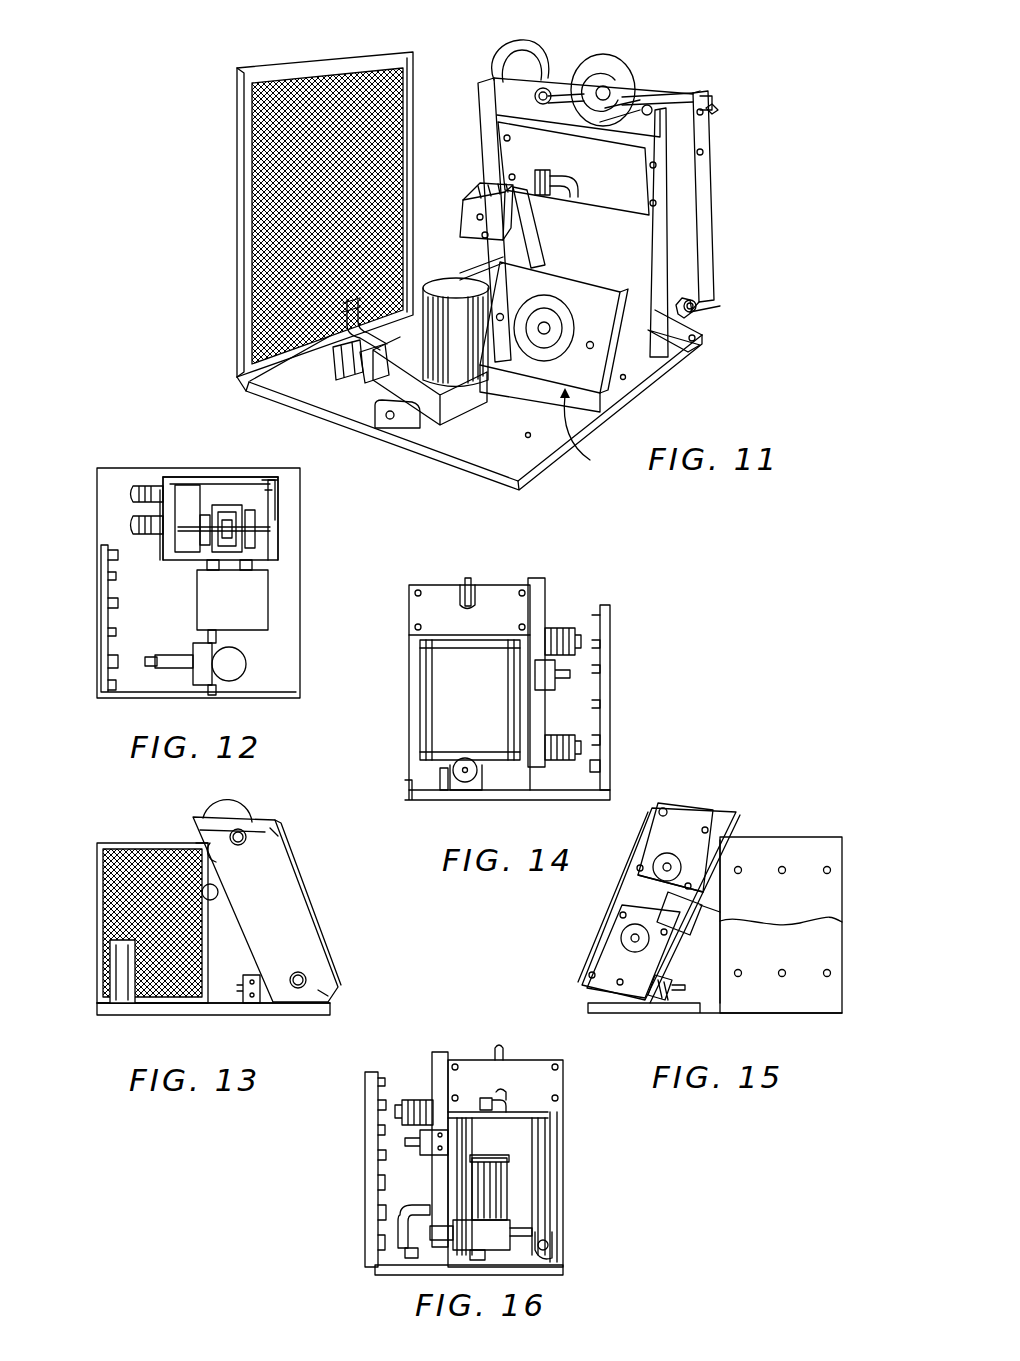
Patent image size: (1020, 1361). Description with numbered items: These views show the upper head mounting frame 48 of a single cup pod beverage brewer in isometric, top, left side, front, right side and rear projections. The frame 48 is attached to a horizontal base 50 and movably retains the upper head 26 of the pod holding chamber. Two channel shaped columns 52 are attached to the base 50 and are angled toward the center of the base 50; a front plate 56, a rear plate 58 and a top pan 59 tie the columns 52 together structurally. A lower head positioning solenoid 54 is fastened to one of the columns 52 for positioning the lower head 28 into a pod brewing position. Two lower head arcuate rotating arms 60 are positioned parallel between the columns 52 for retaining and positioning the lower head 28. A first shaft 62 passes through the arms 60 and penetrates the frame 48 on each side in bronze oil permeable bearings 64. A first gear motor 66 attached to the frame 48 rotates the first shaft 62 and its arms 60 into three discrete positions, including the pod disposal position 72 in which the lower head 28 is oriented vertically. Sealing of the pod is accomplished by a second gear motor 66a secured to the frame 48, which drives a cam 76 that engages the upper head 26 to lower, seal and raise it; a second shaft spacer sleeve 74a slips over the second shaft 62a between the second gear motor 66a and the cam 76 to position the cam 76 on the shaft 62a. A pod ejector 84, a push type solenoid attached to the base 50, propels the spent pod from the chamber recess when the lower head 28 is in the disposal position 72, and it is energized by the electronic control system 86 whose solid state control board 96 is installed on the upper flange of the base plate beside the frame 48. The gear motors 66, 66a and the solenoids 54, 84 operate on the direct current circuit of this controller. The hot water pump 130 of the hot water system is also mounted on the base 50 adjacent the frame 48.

In FIG. 12, the upper head 26 is at (195, 500).
In FIG. 11, the lower head 28 is at (618, 352).
In FIG. 16, the lower head 28 is at (532, 1143).
In FIG. 11, the upper head mounting frame 48 is at (730, 242).
In FIG. 12, the upper head mounting frame 48 is at (194, 442).
In FIG. 14, the upper head mounting frame 48 is at (642, 720).
In FIG. 13, the upper head mounting frame 48 is at (138, 1018).
In FIG. 15, the upper head mounting frame 48 is at (822, 838).
In FIG. 16, the upper head mounting frame 48 is at (582, 1195).
In FIG. 11, the horizontal base 50 is at (538, 488).
In FIG. 12, the horizontal base 50 is at (118, 700).
In FIG. 13, the horizontal base 50 is at (288, 1015).
In FIG. 15, the horizontal base 50 is at (820, 1015).
In FIG. 16, the horizontal base 50 is at (380, 1276).
In FIG. 11, the channel shaped columns 52 is at (480, 100).
In FIG. 12, the channel shaped columns 52 is at (165, 490).
In FIG. 14, the channel shaped columns 52 is at (410, 696).
In FIG. 13, the channel shaped columns 52 is at (320, 932).
In FIG. 15, the channel shaped columns 52 is at (605, 900).
In FIG. 16, the channel shaped columns 52 is at (565, 1175).
In FIG. 11, the lower head positioning solenoid 54 is at (472, 186).
In FIG. 14, the lower head positioning solenoid 54 is at (562, 672).
In FIG. 15, the lower head positioning solenoid 54 is at (843, 930).
In FIG. 16, the lower head positioning solenoid 54 is at (420, 1142).
In FIG. 11, the front plate 56 is at (700, 125).
In FIG. 12, the front plate 56 is at (232, 490).
In FIG. 14, the front plate 56 is at (410, 618).
In FIG. 13, the front plate 56 is at (290, 855).
In FIG. 15, the front plate 56 is at (640, 845).
In FIG. 11, the rear plate 58 is at (665, 185).
In FIG. 13, the rear plate 58 is at (197, 843).
In FIG. 15, the rear plate 58 is at (728, 850).
In FIG. 16, the rear plate 58 is at (478, 1060).
In FIG. 12, the top pan 59 is at (263, 485).
In FIG. 14, the lower head arcuate rotating arms 60 is at (507, 665).
In FIG. 16, the lower head arcuate rotating arms 60 is at (465, 1210).
In FIG. 11, the first shaft 62 is at (694, 322).
In FIG. 14, the first shaft 62 is at (448, 772).
In FIG. 13, the first shaft 62 is at (308, 978).
In FIG. 16, the first shaft 62 is at (555, 1242).
In FIG. 11, the second shaft 62a is at (647, 108).
In FIG. 12, the second shaft 62a is at (193, 535).
In FIG. 13, the second shaft 62a is at (245, 838).
In FIG. 11, the bronze oil permeable bearings 64 is at (708, 110).
In FIG. 13, the bronze oil permeable bearings 64 is at (272, 832).
In FIG. 12, the first gear motor 66 is at (135, 535).
In FIG. 14, the first gear motor 66 is at (582, 750).
In FIG. 15, the first gear motor 66 is at (590, 950).
In FIG. 16, the first gear motor 66 is at (420, 1098).
In FIG. 11, the second gear motor 66a is at (535, 48).
In FIG. 12, the second gear motor 66a is at (142, 486).
In FIG. 14, the second gear motor 66a is at (577, 640).
In FIG. 15, the second gear motor 66a is at (690, 818).
In FIG. 11, the pod disposal position 72 is at (590, 433).
In FIG. 11, the second shaft spacer sleeve 74a is at (551, 88).
In FIG. 12, the second shaft spacer sleeve 74a is at (275, 560).
In FIG. 11, the cam 76 is at (618, 62).
In FIG. 14, the cam 76 is at (472, 595).
In FIG. 13, the cam 76 is at (225, 810).
In FIG. 16, the cam 76 is at (503, 1052).
In FIG. 14, the pod ejector 84 is at (468, 792).
In FIG. 11, the electronic control system 86 is at (228, 232).
In FIG. 13, the electronic control system 86 is at (88, 916).
In FIG. 11, the solid state control board 96 is at (238, 123).
In FIG. 13, the solid state control board 96 is at (100, 968).
In FIG. 11, the hot water pump 130 is at (430, 430).
In FIG. 12, the hot water pump 130 is at (238, 682).
In FIG. 16, the hot water pump 130 is at (545, 1262).